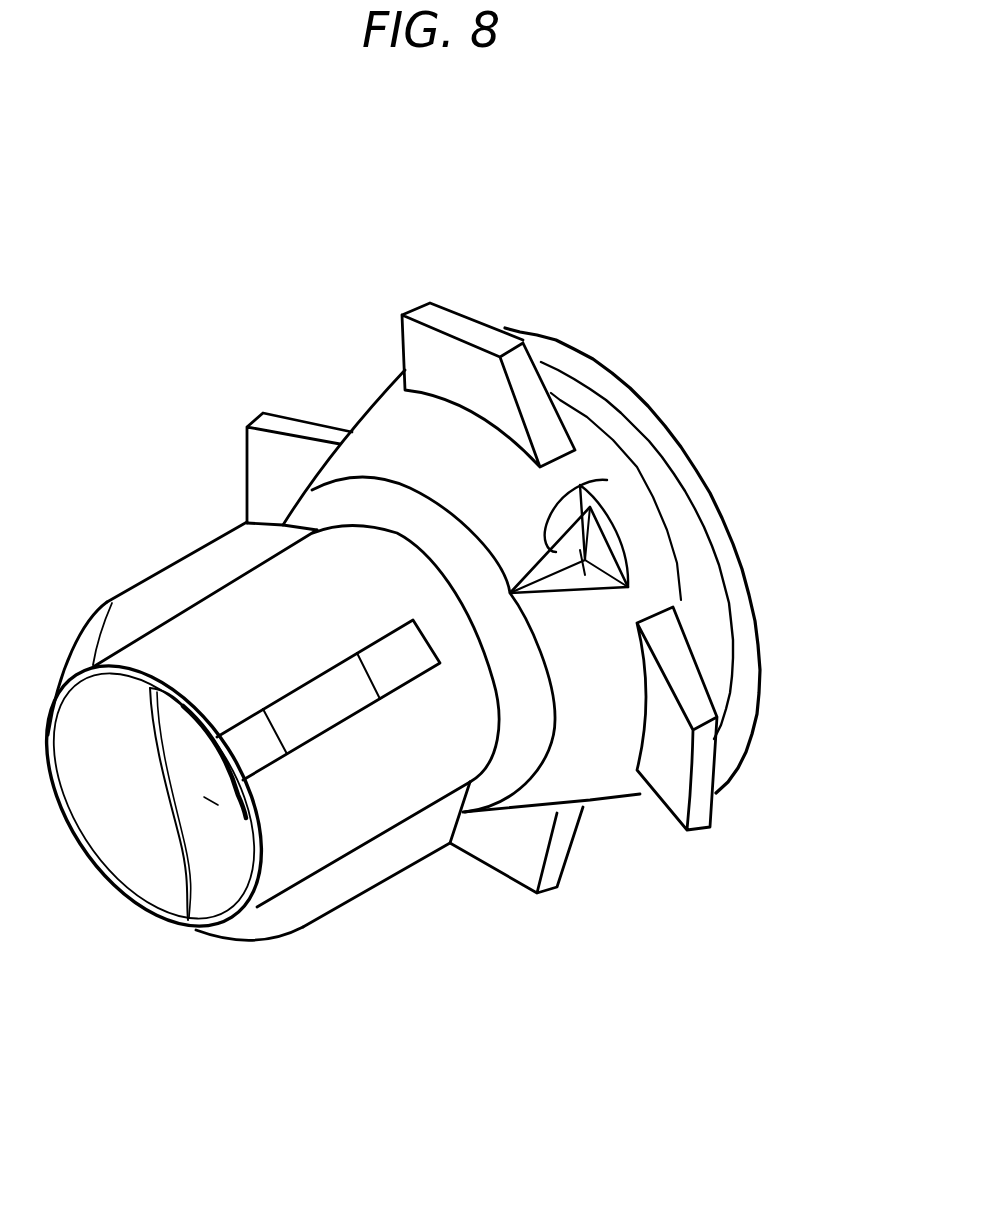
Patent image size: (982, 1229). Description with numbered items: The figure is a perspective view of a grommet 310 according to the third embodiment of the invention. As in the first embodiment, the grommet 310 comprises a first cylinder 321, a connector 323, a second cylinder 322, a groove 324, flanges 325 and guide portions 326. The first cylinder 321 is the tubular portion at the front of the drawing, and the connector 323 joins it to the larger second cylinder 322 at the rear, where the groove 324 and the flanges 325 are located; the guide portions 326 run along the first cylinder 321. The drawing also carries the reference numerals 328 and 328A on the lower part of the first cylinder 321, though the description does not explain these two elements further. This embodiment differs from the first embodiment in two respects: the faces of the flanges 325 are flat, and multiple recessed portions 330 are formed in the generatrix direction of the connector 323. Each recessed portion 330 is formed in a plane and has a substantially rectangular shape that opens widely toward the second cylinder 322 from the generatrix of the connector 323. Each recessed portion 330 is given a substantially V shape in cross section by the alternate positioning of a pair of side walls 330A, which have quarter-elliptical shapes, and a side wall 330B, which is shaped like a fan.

The grommet 310 is at (135, 388).
The first cylinder 321 is at (176, 530).
The second cylinder 322 is at (559, 296).
The connector 323 is at (390, 433).
The groove 324 is at (612, 457).
The flanges 325 is at (469, 316).
The guide portions 326 is at (167, 597).
The lower wall 328 is at (340, 833).
The inner bore edge 328A is at (212, 800).
The recessed portions 330 is at (612, 548).
The side walls 330A is at (603, 530).
The side wall 330B is at (625, 603).